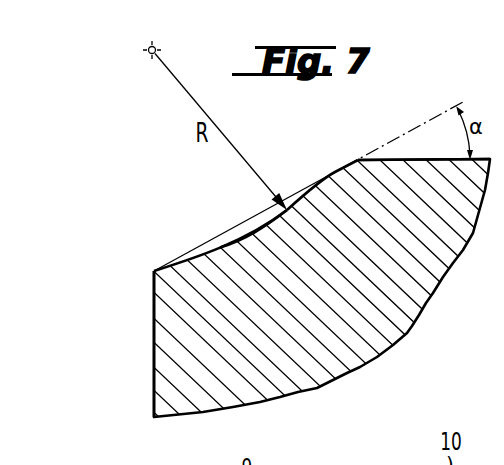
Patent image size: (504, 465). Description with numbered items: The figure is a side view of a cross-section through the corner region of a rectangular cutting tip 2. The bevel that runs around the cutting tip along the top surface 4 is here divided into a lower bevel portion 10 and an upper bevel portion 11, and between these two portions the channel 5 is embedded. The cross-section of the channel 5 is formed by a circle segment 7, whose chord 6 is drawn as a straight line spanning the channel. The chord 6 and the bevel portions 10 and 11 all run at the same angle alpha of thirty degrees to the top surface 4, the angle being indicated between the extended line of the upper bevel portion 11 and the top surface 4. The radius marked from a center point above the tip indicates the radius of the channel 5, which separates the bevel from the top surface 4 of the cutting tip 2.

The cutting tip 2 is at (153, 342).
The top surface 4 is at (425, 158).
The channel 5 is at (218, 242).
The chord 6 is at (222, 234).
The circle segment 7 is at (256, 232).
The lower bevel portion 10 is at (161, 270).
The upper bevel portion 11 is at (345, 168).